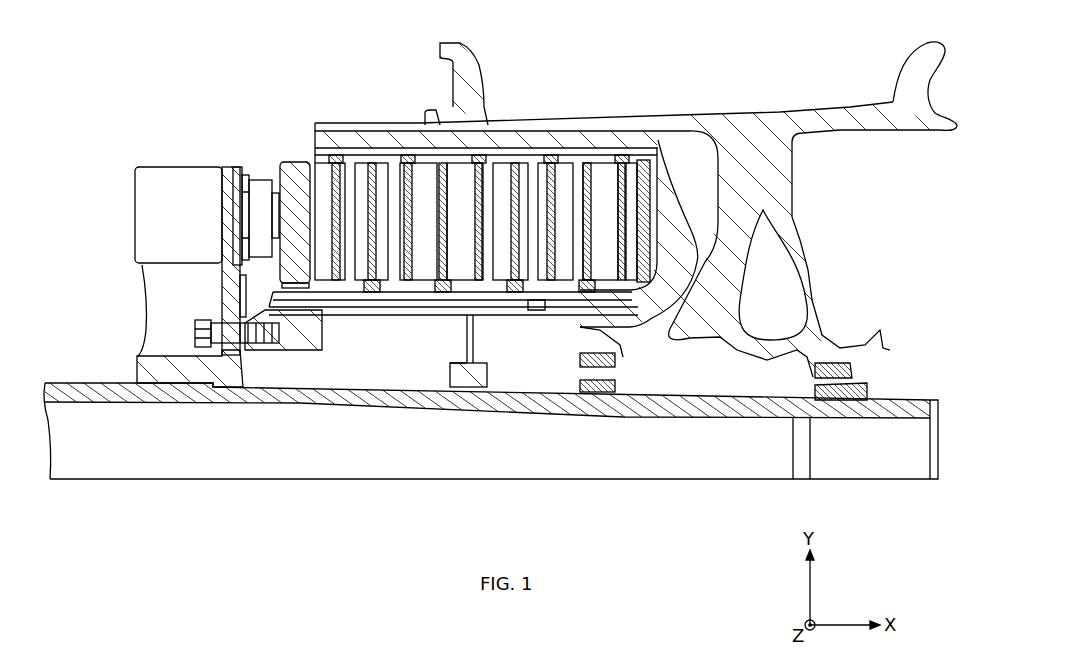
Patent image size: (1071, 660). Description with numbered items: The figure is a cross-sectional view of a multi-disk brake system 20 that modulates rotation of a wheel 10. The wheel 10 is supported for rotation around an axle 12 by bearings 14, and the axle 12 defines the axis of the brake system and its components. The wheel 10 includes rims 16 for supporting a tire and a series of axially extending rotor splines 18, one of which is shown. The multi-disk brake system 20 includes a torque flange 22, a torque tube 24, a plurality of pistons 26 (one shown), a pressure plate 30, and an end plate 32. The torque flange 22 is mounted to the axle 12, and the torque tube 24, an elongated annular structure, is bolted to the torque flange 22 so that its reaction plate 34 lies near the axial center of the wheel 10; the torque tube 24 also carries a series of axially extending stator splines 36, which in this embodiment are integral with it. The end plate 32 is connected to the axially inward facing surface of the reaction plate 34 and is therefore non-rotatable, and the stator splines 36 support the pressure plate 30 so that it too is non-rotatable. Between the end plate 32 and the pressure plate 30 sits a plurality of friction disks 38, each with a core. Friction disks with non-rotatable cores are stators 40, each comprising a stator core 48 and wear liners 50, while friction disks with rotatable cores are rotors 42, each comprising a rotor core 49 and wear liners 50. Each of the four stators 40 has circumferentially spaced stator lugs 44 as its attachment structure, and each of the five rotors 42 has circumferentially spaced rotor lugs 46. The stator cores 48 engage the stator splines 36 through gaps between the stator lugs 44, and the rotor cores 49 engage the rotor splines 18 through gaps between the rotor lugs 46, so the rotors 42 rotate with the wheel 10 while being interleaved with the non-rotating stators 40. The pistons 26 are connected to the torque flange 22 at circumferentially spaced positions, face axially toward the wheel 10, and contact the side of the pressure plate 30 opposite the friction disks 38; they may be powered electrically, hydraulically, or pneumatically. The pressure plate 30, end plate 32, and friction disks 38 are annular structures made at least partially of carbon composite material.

The wheel 10 is at (798, 100).
The axle 12 is at (727, 402).
The bearings 14 is at (612, 374).
The rims 16 is at (900, 78).
The rotor splines 18 is at (430, 125).
The multi-disk brake system 20 is at (222, 78).
The torque flange 22 is at (222, 303).
The torque tube 24 is at (365, 310).
The pistons 26 is at (262, 180).
The pressure plate 30 is at (300, 162).
The end plate 32 is at (654, 135).
The reaction plate 34 is at (680, 262).
The stator splines 36 is at (413, 310).
The friction disks 38 is at (312, 160).
The stator 40 is at (376, 296).
The rotor 42 is at (336, 156).
The stator lugs 44 is at (545, 305).
The rotor lugs 46 is at (528, 140).
The stator core 48 is at (595, 198).
The rotor core 49 is at (615, 225).
The wear liners 50 is at (591, 90).